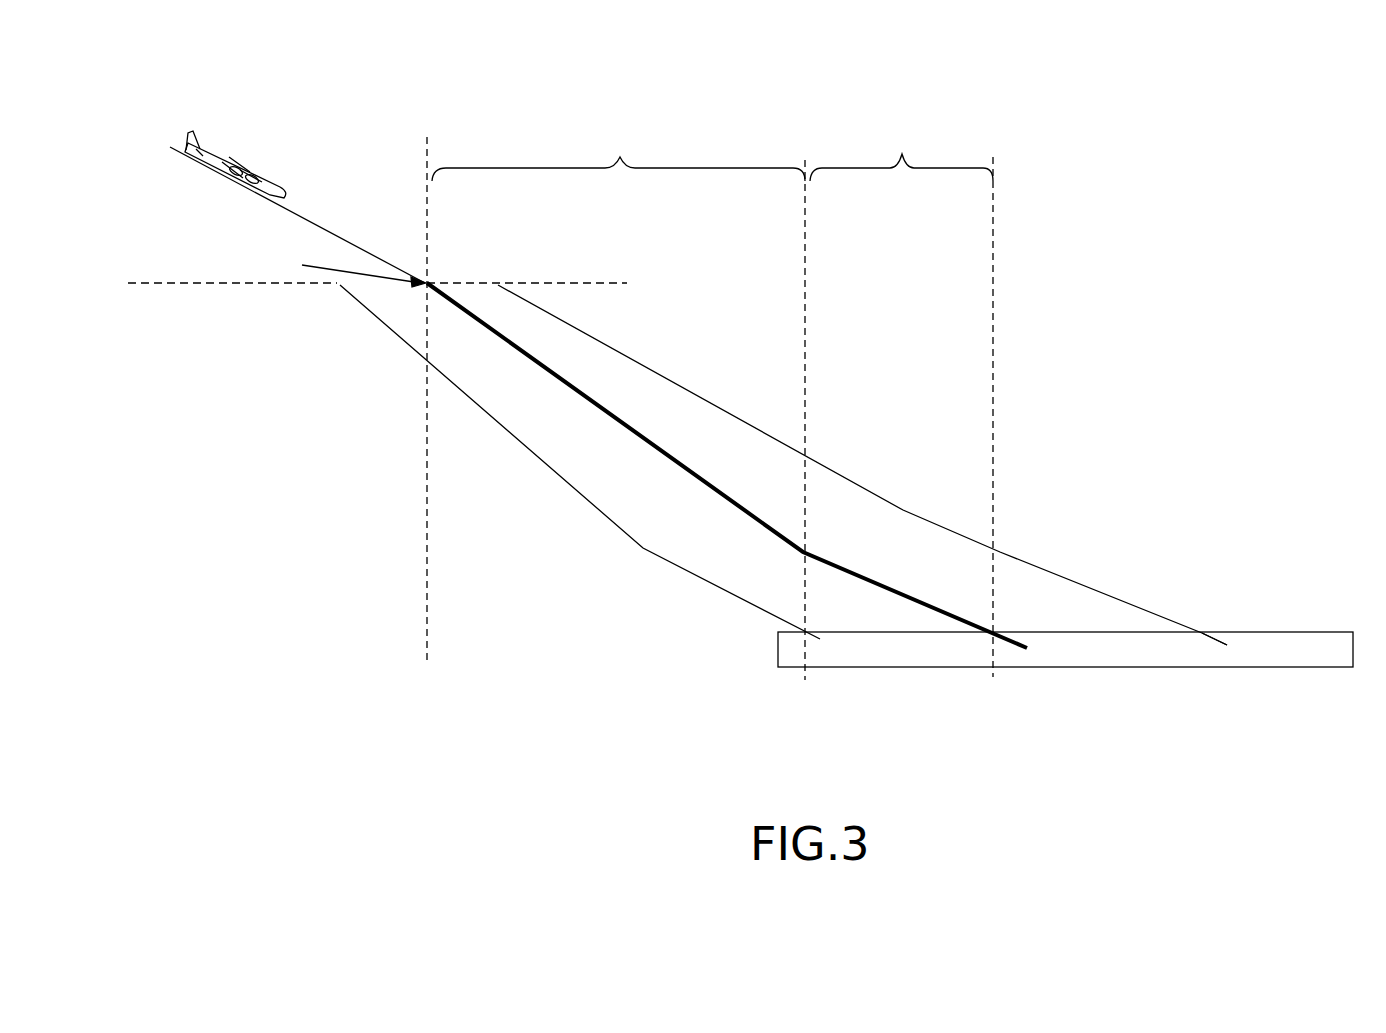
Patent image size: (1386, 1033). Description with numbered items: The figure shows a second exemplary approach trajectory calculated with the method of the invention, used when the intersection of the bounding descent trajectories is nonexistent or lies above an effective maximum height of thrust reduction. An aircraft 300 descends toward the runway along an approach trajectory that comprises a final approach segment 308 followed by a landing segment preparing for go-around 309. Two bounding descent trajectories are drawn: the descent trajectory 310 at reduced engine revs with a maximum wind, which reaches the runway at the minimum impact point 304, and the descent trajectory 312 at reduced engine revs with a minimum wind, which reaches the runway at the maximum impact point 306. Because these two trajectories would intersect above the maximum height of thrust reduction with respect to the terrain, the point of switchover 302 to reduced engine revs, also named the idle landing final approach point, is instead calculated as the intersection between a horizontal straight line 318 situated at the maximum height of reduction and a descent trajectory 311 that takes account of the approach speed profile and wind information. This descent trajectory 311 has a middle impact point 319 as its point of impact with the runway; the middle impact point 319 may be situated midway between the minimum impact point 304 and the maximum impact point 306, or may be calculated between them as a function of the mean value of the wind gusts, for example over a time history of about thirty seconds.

The aircraft 300 is at (197, 130).
The point of switchover 302 is at (427, 282).
The minimum impact point 304 is at (803, 633).
The maximum impact point 306 is at (1203, 635).
The final approach segment 308 is at (620, 157).
The landing segment preparing for go-around 309 is at (902, 152).
The descent trajectory at reduced engine revs with a maximum wind 310 is at (550, 470).
The descent trajectory 311 is at (663, 445).
The descent trajectory at reduced engine revs with a minimum wind 312 is at (903, 510).
The horizontal straight line 318 is at (613, 282).
The middle impact point 319 is at (992, 637).